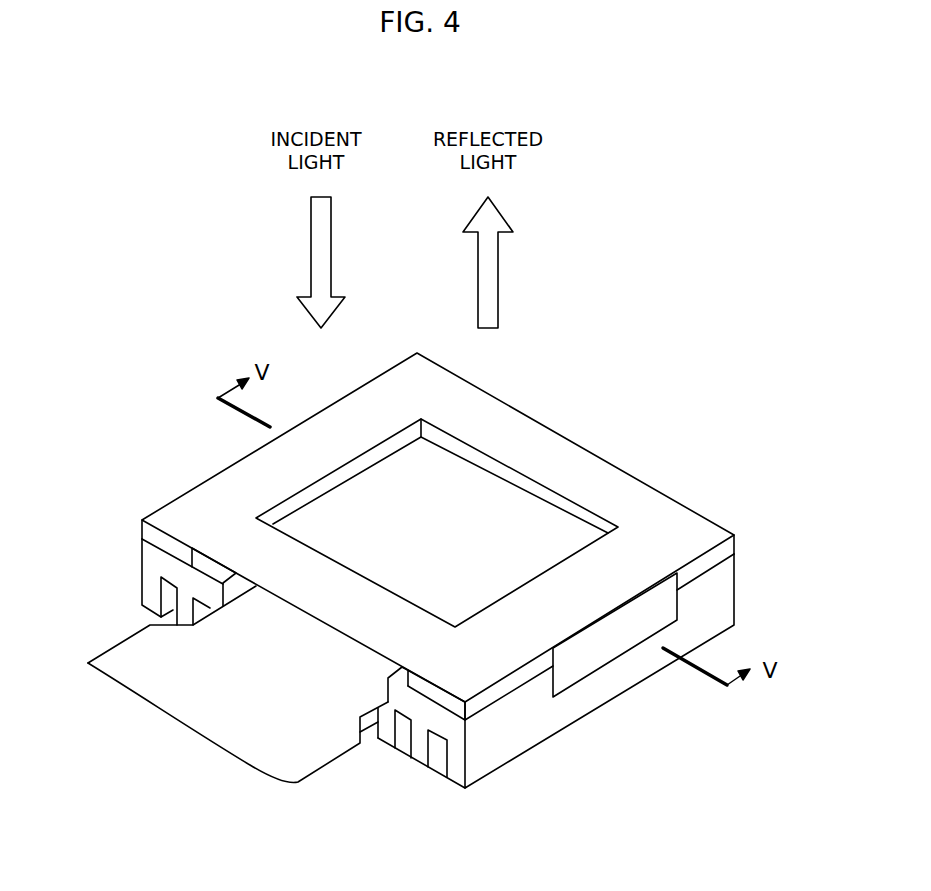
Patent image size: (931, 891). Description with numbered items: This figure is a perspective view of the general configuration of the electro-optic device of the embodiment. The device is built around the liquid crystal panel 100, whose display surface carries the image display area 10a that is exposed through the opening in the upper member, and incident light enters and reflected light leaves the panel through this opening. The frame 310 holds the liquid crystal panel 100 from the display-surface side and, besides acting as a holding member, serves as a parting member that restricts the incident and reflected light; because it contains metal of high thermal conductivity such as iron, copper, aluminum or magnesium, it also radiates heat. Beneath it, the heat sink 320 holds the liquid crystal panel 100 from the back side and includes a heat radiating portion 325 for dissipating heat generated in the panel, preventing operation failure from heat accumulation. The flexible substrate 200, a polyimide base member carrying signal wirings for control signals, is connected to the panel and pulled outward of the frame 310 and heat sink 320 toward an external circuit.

The liquid crystal panel 100 is at (388, 506).
The image display area 10a is at (498, 508).
The frame 310 is at (677, 547).
The heat sink 320 is at (727, 598).
The heat radiating portion 325 is at (421, 762).
The flexible substrate 200 is at (133, 663).